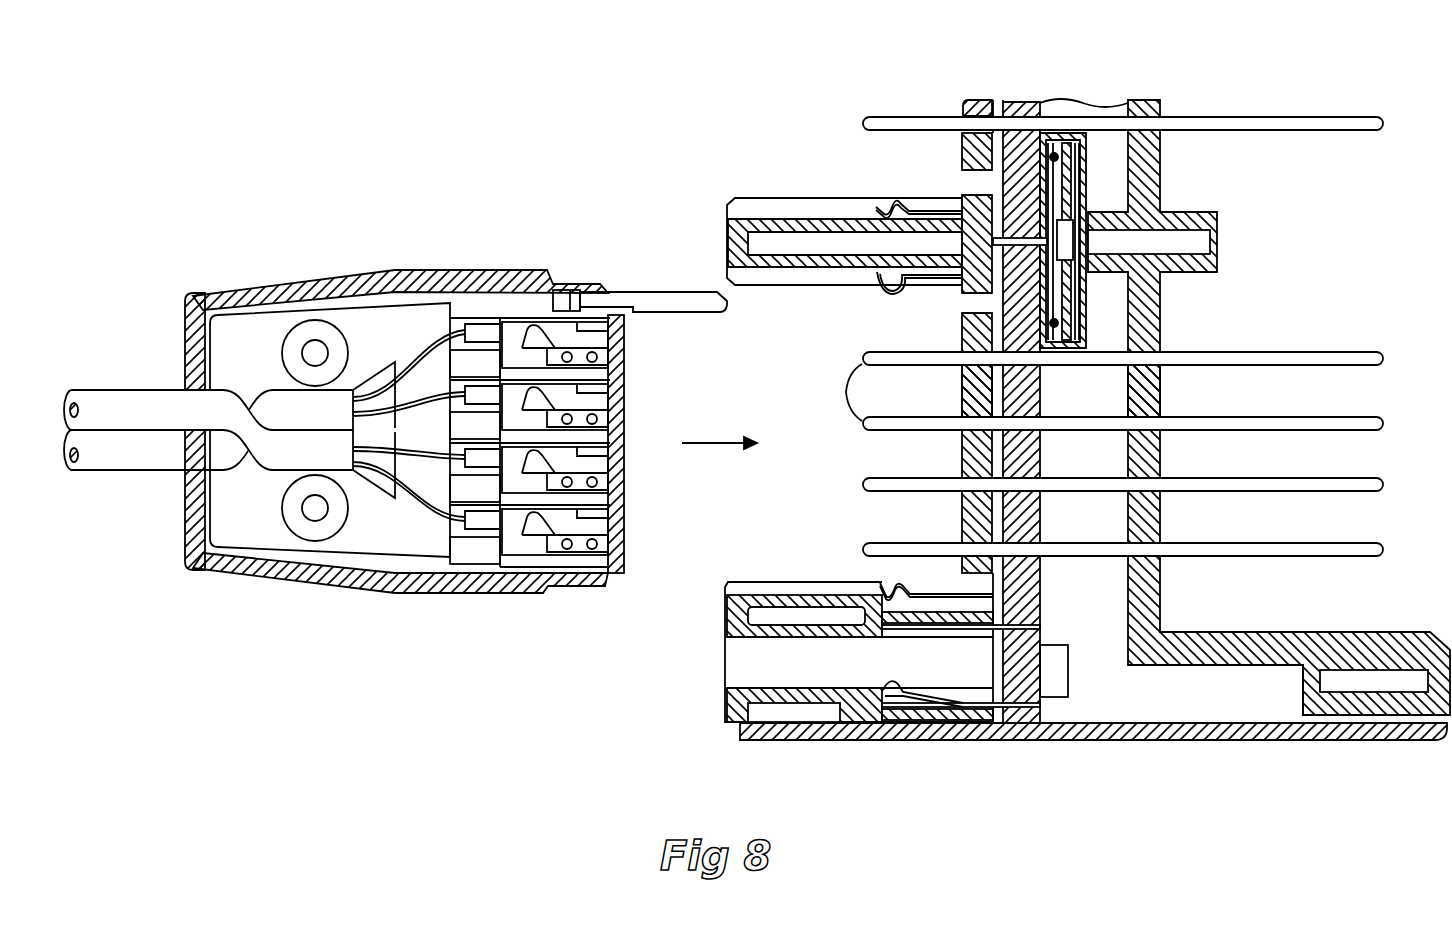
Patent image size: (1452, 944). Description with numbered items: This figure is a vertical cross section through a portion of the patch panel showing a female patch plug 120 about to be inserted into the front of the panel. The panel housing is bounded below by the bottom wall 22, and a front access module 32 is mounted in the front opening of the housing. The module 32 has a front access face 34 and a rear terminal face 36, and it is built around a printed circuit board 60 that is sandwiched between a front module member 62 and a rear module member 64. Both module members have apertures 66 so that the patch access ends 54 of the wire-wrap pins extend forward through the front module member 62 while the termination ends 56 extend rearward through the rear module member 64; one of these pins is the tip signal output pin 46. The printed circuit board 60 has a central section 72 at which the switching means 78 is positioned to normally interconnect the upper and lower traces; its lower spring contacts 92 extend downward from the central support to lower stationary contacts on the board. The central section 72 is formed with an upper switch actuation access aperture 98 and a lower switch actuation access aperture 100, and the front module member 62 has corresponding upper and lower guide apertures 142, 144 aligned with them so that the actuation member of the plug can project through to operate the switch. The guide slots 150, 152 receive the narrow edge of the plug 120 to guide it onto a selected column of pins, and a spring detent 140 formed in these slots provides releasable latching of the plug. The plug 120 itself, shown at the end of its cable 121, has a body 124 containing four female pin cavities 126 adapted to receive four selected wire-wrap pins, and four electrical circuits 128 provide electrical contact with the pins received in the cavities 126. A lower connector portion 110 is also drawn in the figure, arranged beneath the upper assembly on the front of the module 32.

The bottom wall 22 is at (1100, 732).
The front access module 32 is at (1021, 414).
The front access face 34 is at (962, 522).
The rear terminal face 36 is at (1157, 530).
The tip signal output pin 46 is at (930, 637).
The patch access end of wire-wrap pin 54 is at (831, 392).
The termination end of wire-wrap pin 56 is at (1380, 417).
The printed circuit board 60 is at (1030, 608).
The front module member 62 is at (967, 152).
The rear module member 64 is at (1270, 650).
The apertures 66 is at (968, 372).
The central section of printed circuit board 72 is at (1067, 203).
The switching means 78 is at (1093, 152).
The lower spring contacts 92 is at (1060, 310).
The upper switch actuation access aperture 98 is at (1018, 177).
The lower switch actuation access aperture 100 is at (1027, 305).
The lower connector module 110 is at (755, 637).
The female patch plug 120 is at (391, 398).
The cable 121 is at (115, 462).
The plug body 124 is at (366, 546).
The female pin cavities 126 is at (622, 357).
The electrical circuits 128 is at (437, 393).
The spring detent 140 is at (893, 200).
The upper guide aperture 142 is at (968, 187).
The lower guide aperture 144 is at (970, 300).
The guide slot 150 is at (765, 206).
The guide slot 152 is at (770, 585).